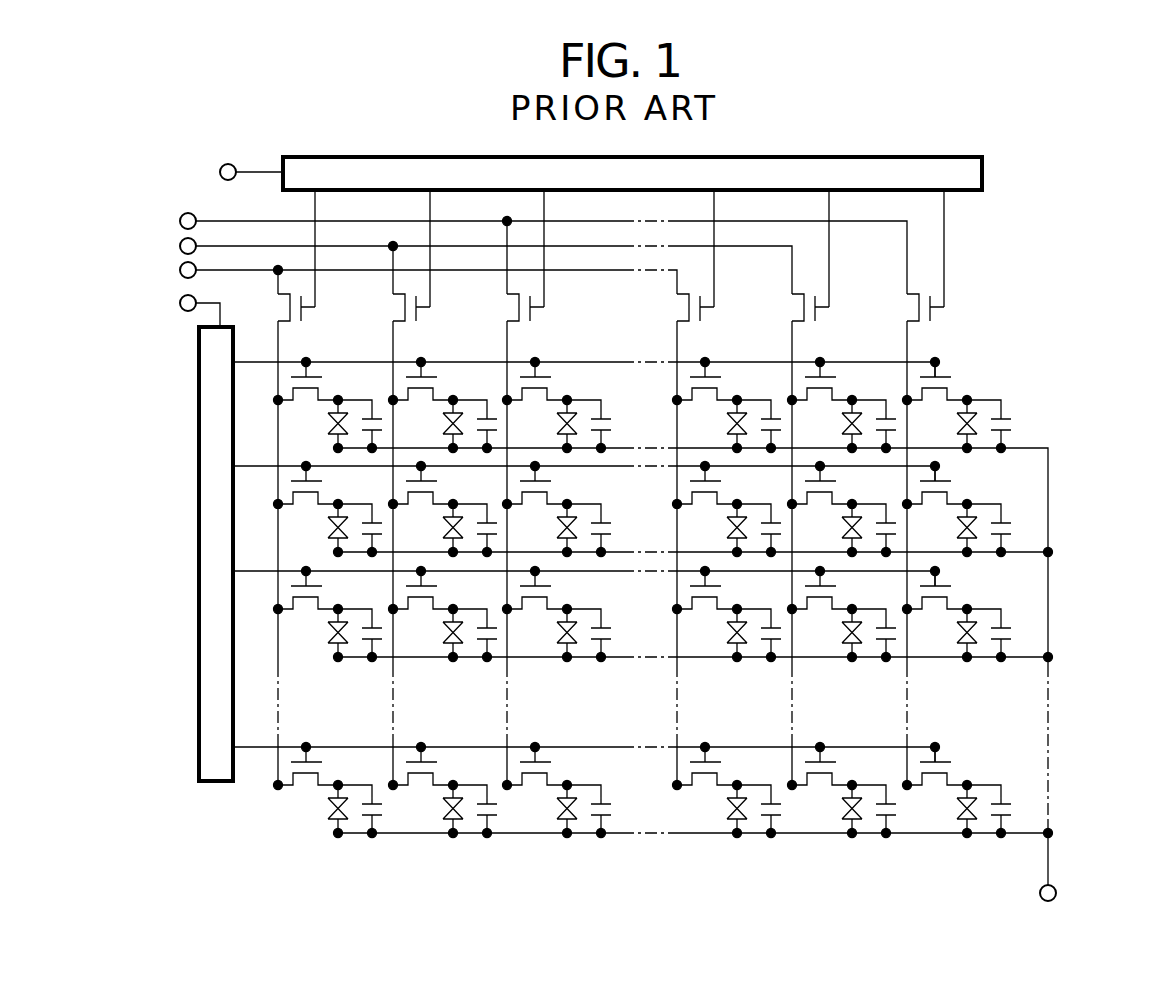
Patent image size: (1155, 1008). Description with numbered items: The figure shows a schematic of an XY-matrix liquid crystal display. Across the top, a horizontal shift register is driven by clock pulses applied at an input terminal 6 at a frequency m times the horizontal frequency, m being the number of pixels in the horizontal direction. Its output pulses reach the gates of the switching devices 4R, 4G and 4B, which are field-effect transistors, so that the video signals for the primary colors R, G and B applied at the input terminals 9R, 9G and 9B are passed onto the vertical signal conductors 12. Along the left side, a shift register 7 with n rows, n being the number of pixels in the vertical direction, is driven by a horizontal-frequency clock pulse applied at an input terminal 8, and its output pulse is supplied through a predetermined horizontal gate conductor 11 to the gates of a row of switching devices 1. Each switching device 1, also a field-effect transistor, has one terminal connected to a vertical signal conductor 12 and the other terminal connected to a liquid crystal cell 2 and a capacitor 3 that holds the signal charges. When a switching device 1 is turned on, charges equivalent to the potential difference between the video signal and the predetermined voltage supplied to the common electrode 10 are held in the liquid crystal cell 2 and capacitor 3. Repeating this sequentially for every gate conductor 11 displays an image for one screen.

The switching device 1 is at (305, 401).
The liquid crystal cell 2 is at (330, 424).
The capacitor 3 is at (384, 418).
The switching device 4R is at (303, 320).
The switching device 4G is at (418, 320).
The switching device 4B is at (532, 320).
The input terminal 6 is at (219, 172).
The shift register 7 is at (198, 538).
The input terminal 8 is at (179, 303).
The input terminal 9B is at (179, 221).
The input terminal 9G is at (179, 246).
The input terminal 9R is at (179, 270).
The common electrode 10 is at (1039, 893).
The gate conductor 11 is at (256, 360).
The vertical signal conductor 12 is at (689, 338).